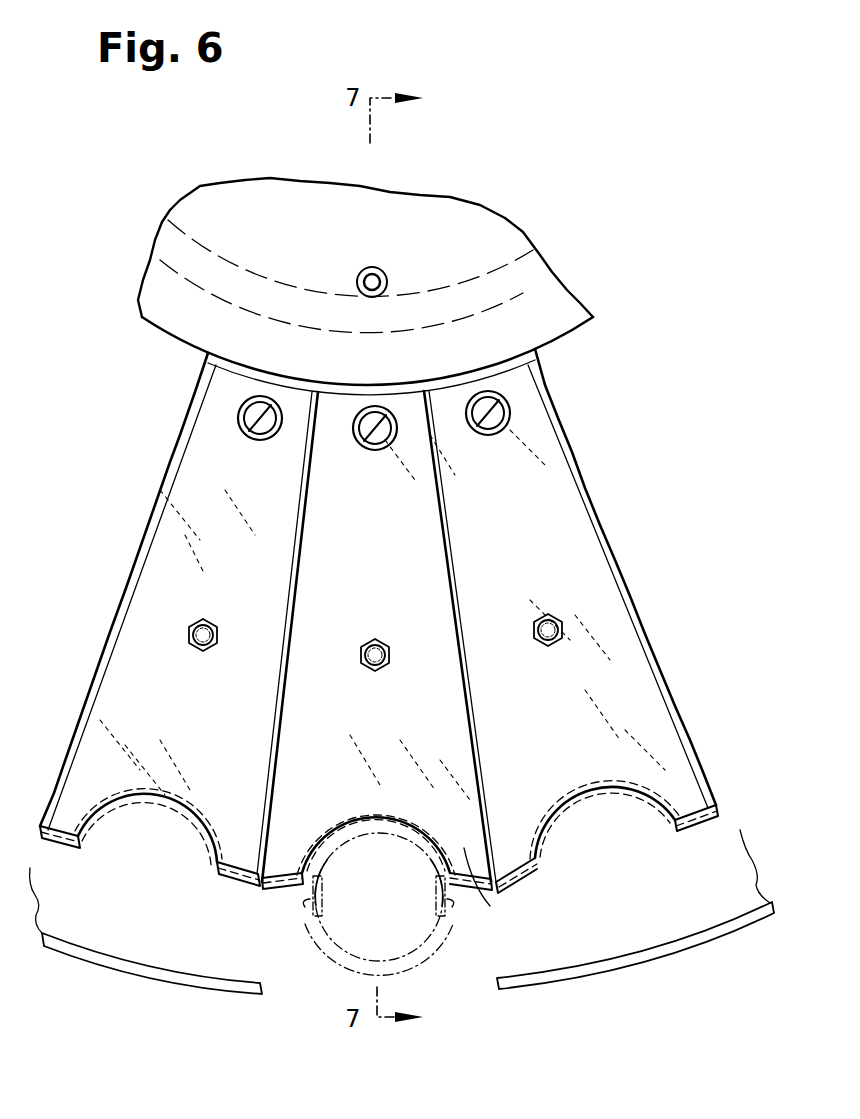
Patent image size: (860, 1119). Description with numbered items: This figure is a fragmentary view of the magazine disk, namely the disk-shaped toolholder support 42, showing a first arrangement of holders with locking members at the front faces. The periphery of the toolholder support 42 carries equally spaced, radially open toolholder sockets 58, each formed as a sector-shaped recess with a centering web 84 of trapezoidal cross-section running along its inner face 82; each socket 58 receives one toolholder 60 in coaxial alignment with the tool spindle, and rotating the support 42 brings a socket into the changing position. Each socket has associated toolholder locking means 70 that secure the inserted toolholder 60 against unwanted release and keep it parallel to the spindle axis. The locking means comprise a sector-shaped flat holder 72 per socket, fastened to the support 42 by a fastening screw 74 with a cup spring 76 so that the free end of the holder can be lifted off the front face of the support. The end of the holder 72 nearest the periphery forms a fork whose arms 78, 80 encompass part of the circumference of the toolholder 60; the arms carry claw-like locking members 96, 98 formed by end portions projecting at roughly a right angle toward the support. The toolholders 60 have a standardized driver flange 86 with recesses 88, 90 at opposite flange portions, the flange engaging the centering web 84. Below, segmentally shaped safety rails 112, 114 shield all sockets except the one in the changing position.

The toolholder support 42 is at (530, 362).
The toolholder socket 58 is at (609, 822).
The toolholder 60 is at (314, 962).
The toolholder locking means 70 is at (185, 562).
The holder 72 is at (165, 718).
The fastening screw 74 is at (377, 441).
The cup spring 76 is at (356, 428).
The fork arm 78 is at (260, 893).
The fork arm 80 is at (493, 888).
The inner face 82 is at (99, 810).
The centering web 84 is at (200, 821).
The driver flange 86 is at (426, 953).
The recess 88 is at (444, 906).
The recess 90 is at (312, 905).
The locking member 96 is at (290, 850).
The locking member 98 is at (491, 907).
The safety rail 112 is at (607, 960).
The safety rail 114 is at (110, 960).